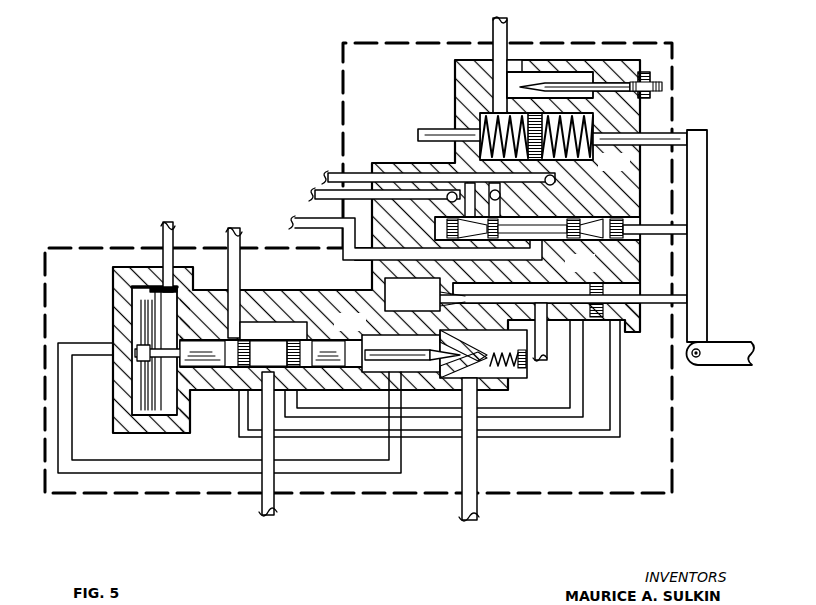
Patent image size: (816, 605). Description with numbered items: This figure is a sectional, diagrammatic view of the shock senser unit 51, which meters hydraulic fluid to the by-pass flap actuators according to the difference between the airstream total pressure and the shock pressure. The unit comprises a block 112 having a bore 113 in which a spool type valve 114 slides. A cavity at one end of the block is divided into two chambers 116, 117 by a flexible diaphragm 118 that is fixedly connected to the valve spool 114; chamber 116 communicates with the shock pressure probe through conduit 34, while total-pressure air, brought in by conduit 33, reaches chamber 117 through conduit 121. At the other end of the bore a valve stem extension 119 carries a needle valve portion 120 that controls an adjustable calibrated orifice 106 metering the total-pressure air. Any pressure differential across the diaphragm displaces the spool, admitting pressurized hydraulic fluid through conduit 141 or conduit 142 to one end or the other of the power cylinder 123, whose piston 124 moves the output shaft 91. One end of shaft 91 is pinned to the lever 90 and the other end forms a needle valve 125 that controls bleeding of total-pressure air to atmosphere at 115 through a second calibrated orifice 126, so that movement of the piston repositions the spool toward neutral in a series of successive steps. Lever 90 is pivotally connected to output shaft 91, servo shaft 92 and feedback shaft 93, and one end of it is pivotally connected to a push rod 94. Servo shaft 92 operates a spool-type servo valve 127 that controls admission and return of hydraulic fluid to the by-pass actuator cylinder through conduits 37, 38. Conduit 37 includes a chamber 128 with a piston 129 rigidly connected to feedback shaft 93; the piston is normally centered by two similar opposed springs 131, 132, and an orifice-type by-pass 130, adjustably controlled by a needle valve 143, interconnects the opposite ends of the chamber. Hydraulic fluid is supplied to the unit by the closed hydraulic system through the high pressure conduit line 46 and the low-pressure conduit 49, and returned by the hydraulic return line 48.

The conduit 33 is at (470, 476).
The conduit 34 is at (174, 230).
The conduit 37 is at (492, 34).
The conduit 38 is at (330, 193).
The high pressure conduit line 46 is at (307, 220).
The hydraulic return line 48 is at (339, 174).
The conduit 49 is at (272, 500).
The shock senser unit 51 is at (641, 42).
The lever 90 is at (694, 272).
The output shaft 91 is at (645, 303).
The servo shaft 92 is at (657, 228).
The feedback shaft 93 is at (678, 133).
The push rod 94 is at (728, 356).
The adjustable calibrated orifice 106 is at (366, 344).
The block 112 is at (645, 105).
The bore 113 is at (234, 364).
The spool type valve 114 is at (343, 360).
The atmosphere bleed 115 is at (541, 362).
The chamber 116 is at (189, 432).
The chamber 117 is at (140, 407).
The flexible diaphragm 118 is at (140, 294).
The valve stem extension 119 is at (390, 360).
The needle valve portion 120 is at (446, 384).
The conduit 121 is at (226, 474).
The power cylinder 123 is at (642, 325).
The piston 124 is at (626, 293).
The needle valve 125 is at (450, 300).
The second calibrated orifice 126 is at (450, 296).
The servo valve 127 is at (573, 245).
The chamber 128 is at (470, 108).
The piston 129 is at (540, 116).
The orifice-type by-pass 130 is at (573, 56).
The spring 131 is at (598, 147).
The spring 132 is at (445, 152).
The conduit 141 is at (508, 414).
The conduit 142 is at (569, 437).
The needle valve 143 is at (537, 80).